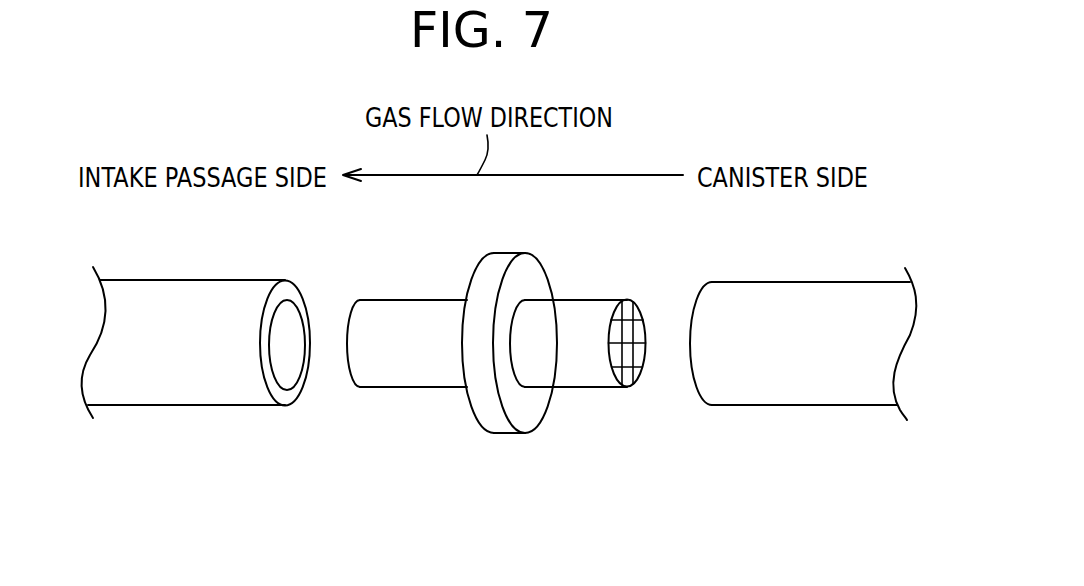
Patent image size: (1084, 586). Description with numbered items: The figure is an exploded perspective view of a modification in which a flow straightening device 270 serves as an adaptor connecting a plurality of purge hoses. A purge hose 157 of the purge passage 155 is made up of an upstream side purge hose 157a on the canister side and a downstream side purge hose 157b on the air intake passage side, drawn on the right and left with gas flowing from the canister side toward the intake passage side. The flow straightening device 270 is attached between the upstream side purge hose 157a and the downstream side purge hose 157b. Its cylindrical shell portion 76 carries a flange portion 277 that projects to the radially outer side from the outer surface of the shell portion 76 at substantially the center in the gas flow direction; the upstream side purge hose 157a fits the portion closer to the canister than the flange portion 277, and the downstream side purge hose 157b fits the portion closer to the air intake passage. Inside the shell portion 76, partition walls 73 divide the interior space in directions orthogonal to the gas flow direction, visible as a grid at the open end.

The purge passage 155 is at (498, 348).
The purge hose 157 is at (498, 348).
The upstream side purge hose 157a is at (740, 282).
The downstream side purge hose 157b is at (182, 280).
The flow straightening device 270 is at (395, 387).
The flange portion 277 is at (507, 433).
The shell portion 76 is at (593, 298).
The partition walls 73 is at (635, 307).